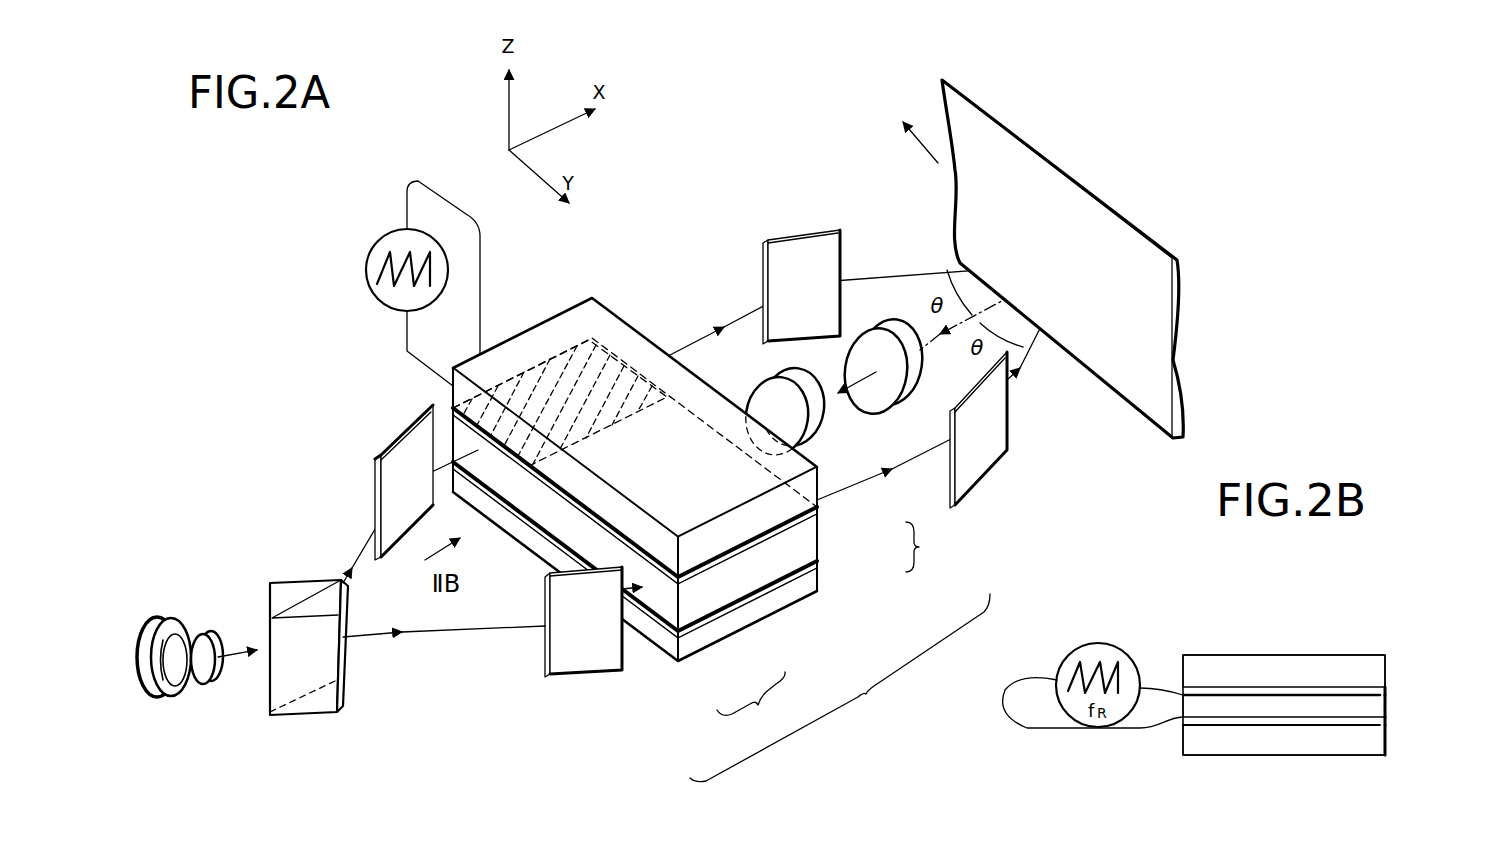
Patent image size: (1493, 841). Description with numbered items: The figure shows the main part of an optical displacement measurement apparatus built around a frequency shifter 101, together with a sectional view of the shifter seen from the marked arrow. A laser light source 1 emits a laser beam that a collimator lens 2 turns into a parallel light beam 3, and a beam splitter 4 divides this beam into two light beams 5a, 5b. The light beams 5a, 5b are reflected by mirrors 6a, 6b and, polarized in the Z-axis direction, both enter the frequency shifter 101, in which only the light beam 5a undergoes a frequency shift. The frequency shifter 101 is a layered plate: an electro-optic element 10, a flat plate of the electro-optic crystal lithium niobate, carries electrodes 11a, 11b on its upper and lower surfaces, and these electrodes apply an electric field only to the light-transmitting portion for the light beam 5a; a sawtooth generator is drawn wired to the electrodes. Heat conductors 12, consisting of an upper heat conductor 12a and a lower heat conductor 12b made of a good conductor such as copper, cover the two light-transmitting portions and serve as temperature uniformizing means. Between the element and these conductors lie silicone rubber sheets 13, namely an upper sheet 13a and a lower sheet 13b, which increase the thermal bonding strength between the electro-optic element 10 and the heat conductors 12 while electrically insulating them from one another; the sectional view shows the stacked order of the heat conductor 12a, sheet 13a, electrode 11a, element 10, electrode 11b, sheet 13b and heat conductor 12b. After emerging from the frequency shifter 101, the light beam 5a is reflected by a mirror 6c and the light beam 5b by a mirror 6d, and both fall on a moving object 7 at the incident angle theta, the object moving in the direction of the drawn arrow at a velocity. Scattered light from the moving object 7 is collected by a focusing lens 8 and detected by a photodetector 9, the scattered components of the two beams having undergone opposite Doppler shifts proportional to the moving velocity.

In FIG. 2A, the laser light source 1 is at (176, 616).
In FIG. 2A, the collimator lens 2 is at (218, 678).
In FIG. 2A, the parallel light beam 3 is at (238, 648).
In FIG. 2A, the beam splitter 4 is at (300, 590).
In FIG. 2A, the light beam 5a is at (364, 545).
In FIG. 2A, the light beam 5b is at (453, 637).
In FIG. 2A, the mirror 6a is at (393, 437).
In FIG. 2A, the mirror 6b is at (582, 663).
In FIG. 2A, the mirror 6c is at (796, 246).
In FIG. 2A, the mirror 6d is at (978, 443).
In FIG. 2A, the moving object 7 is at (1034, 172).
In FIG. 2A, the focusing lens 8 is at (887, 393).
In FIG. 2A, the photodetector 9 is at (762, 397).
In FIG. 2A, the electro-optic element 10 is at (747, 578).
In FIG. 2B, the electro-optic element 10 is at (1375, 707).
In FIG. 2A, the electrode 11a is at (620, 362).
In FIG. 2B, the electrode 11a is at (1207, 695).
In FIG. 2B, the electrode 11b is at (1214, 717).
In FIG. 2A, the heat conductors 12 is at (751, 705).
In FIG. 2A, the heat conductor 12a is at (705, 547).
In FIG. 2B, the heat conductor 12a is at (1275, 663).
In FIG. 2A, the heat conductor 12b is at (740, 620).
In FIG. 2B, the heat conductor 12b is at (1290, 745).
In FIG. 2A, the silicone rubber sheets 13 is at (926, 547).
In FIG. 2A, the silicone rubber sheet 13a is at (817, 513).
In FIG. 2B, the silicone rubber sheet 13a is at (1383, 692).
In FIG. 2A, the silicone rubber sheet 13b is at (800, 573).
In FIG. 2B, the silicone rubber sheet 13b is at (1383, 722).
In FIG. 2A, the frequency shifter 101 is at (840, 688).